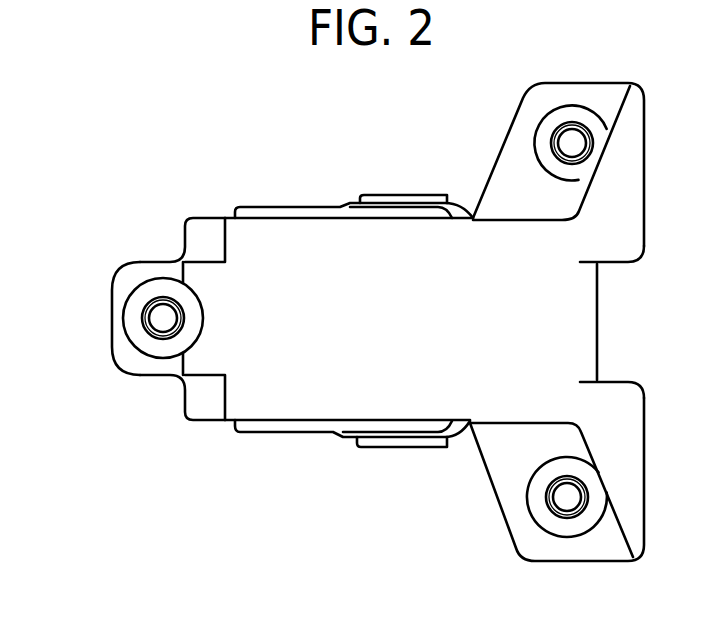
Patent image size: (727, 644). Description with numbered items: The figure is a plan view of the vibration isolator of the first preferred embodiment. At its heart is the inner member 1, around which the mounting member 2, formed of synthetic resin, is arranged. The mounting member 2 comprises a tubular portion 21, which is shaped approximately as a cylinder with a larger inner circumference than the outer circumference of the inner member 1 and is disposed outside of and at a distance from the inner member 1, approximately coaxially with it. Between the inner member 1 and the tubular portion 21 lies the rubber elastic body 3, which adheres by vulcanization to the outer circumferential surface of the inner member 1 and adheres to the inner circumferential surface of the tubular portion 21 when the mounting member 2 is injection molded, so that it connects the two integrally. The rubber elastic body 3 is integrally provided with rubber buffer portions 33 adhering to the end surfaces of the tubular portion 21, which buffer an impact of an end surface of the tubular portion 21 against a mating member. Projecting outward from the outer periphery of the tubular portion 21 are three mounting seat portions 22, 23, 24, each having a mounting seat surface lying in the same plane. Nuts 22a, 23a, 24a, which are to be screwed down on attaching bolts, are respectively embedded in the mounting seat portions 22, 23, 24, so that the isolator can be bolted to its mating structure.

The inner member 1 is at (398, 193).
The mounting member 2 is at (219, 214).
The rubber elastic body 3 is at (457, 437).
The tubular portion 21 is at (297, 335).
The mounting seat portion 22 is at (138, 276).
The nut 22a is at (136, 318).
The mounting seat portion 23 is at (515, 503).
The nut 23a is at (557, 518).
The mounting seat portion 24 is at (515, 148).
The nut 24a is at (551, 132).
The rubber buffer portion 33 is at (307, 212).